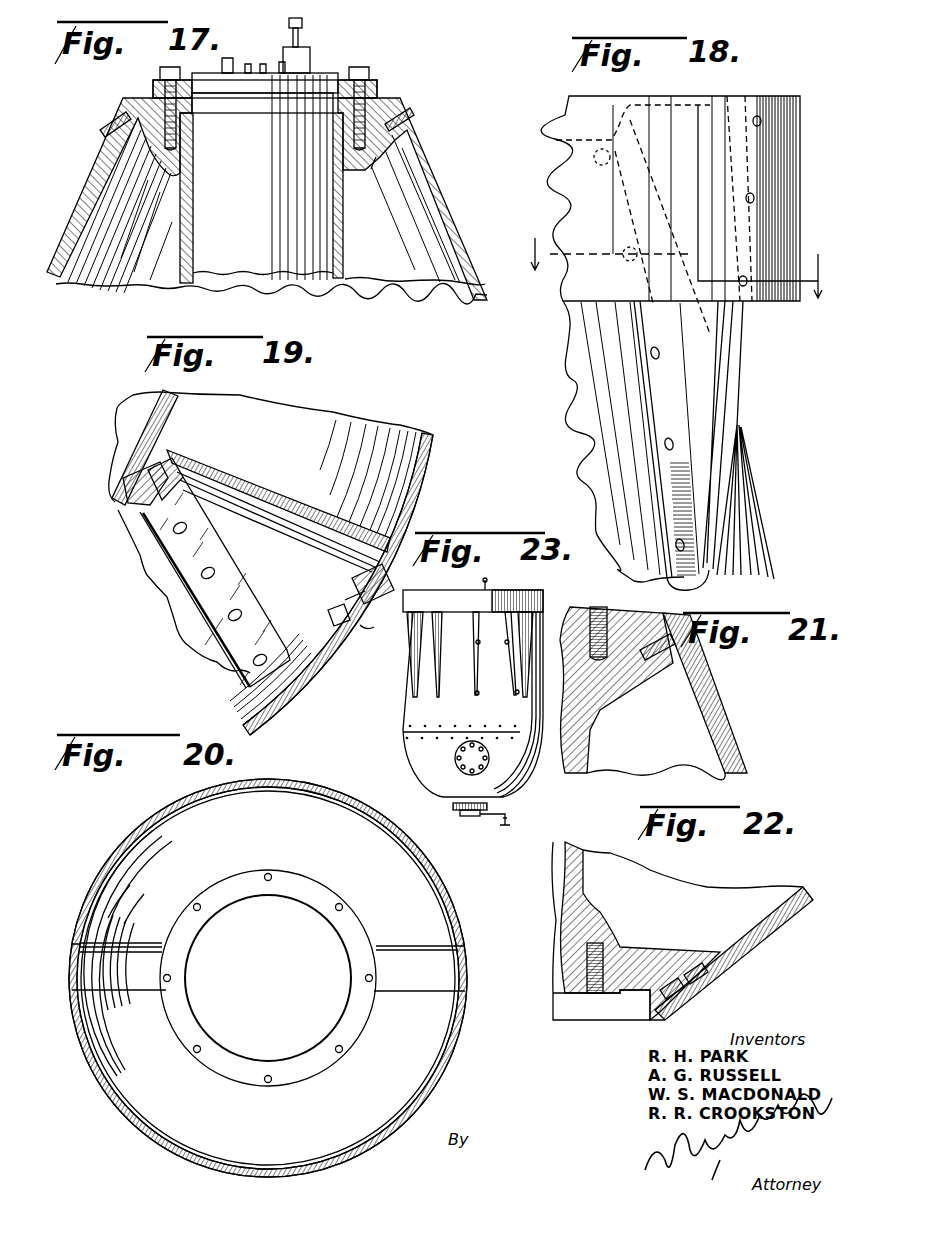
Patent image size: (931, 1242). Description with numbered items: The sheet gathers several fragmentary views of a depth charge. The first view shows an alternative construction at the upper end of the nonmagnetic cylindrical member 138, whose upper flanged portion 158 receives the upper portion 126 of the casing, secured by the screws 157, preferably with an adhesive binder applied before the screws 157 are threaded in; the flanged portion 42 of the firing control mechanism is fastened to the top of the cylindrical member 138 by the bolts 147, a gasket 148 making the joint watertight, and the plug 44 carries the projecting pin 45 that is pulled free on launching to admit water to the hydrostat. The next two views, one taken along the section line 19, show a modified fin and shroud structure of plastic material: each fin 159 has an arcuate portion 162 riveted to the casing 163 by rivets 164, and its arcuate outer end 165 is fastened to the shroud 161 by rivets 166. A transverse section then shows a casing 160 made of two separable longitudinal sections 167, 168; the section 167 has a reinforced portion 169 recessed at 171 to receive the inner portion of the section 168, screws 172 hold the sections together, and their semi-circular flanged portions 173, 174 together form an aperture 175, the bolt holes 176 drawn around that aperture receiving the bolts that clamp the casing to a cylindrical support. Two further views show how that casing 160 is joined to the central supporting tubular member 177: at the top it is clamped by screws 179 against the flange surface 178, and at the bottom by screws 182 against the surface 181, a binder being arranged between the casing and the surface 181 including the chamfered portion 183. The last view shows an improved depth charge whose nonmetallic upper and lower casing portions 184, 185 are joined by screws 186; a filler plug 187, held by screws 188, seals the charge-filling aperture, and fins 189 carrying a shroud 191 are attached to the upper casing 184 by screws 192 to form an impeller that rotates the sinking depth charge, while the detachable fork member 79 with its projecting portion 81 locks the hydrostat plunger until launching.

In FIG. 18, the section line 19— 19 is at (678, 201).
In FIG. 17, the flanged portion 42 is at (378, 88).
In FIG. 17, the plug 44 is at (310, 52).
In FIG. 17, the projecting pin 45 is at (303, 22).
In FIG. 23, the projecting pin 45 is at (490, 581).
In FIG. 23, the fork member 79 is at (488, 820).
In FIG. 23, the projecting portion 81 is at (510, 815).
In FIG. 17, the upper portion of casing 126 is at (443, 187).
In FIG. 17, the cylindrical member 138 is at (261, 198).
In FIG. 17, the bolts 147 is at (158, 73).
In FIG. 17, the gasket 148 is at (373, 98).
In FIG. 17, the screws 157 is at (123, 107).
In FIG. 17, the upper flanged portion 158 is at (377, 158).
In FIG. 18, the fins 159 is at (714, 435).
In FIG. 19, the fins 159 is at (263, 485).
In FIG. 20, the casing 160 is at (470, 926).
In FIG. 21, the casing 160 is at (732, 716).
In FIG. 22, the casing 160 is at (760, 952).
In FIG. 18, the shroud 161 is at (565, 130).
In FIG. 19, the shroud 161 is at (433, 442).
In FIG. 18, the arcuate portion 162 is at (671, 445).
In FIG. 19, the arcuate portion 162 is at (143, 458).
In FIG. 18, the casing 163 is at (782, 482).
In FIG. 19, the casing 163 is at (367, 432).
In FIG. 18, the rivets 164 is at (614, 177).
In FIG. 19, the rivets 164 is at (133, 482).
In FIG. 18, the arcuate outer end 165 is at (750, 112).
In FIG. 19, the arcuate outer end 165 is at (363, 555).
In FIG. 18, the rivets 166 is at (761, 125).
In FIG. 19, the rivets 166 is at (347, 582).
In FIG. 20, the longitudinal section 167 is at (398, 914).
In FIG. 21, the longitudinal section 167 is at (743, 750).
In FIG. 22, the longitudinal section 167 is at (750, 899).
In FIG. 20, the longitudinal section 168 is at (407, 1029).
In FIG. 20, the reinforced portion 169 is at (269, 967).
In FIG. 20, the recessed portion 171 is at (455, 976).
In FIG. 20, the screws 172 is at (67, 986).
In FIG. 20, the semi-circular flanged portion 173 is at (190, 944).
In FIG. 20, the semi-circular flanged portion 174 is at (185, 1024).
In FIG. 20, the aperture 175 is at (345, 944).
In FIG. 20, the bolt holes 176 is at (336, 904).
In FIG. 21, the central supporting tubular member 177 is at (587, 753).
In FIG. 22, the central supporting tubular member 177 is at (583, 867).
In FIG. 21, the flange surface 178 is at (673, 666).
In FIG. 21, the screws 179 is at (675, 638).
In FIG. 22, the surface 181 is at (663, 957).
In FIG. 22, the screws 182 is at (687, 1002).
In FIG. 22, the chamfered portion 183 is at (683, 957).
In FIG. 23, the upper casing portion 184 is at (408, 708).
In FIG. 23, the lower casing portion 185 is at (412, 747).
In FIG. 23, the screws 186 is at (487, 723).
In FIG. 23, the filler plug 187 is at (457, 763).
In FIG. 23, the screws 188 is at (462, 773).
In FIG. 23, the fins 189 is at (425, 633).
In FIG. 23, the shroud 191 is at (543, 597).
In FIG. 23, the screws 192 is at (480, 667).